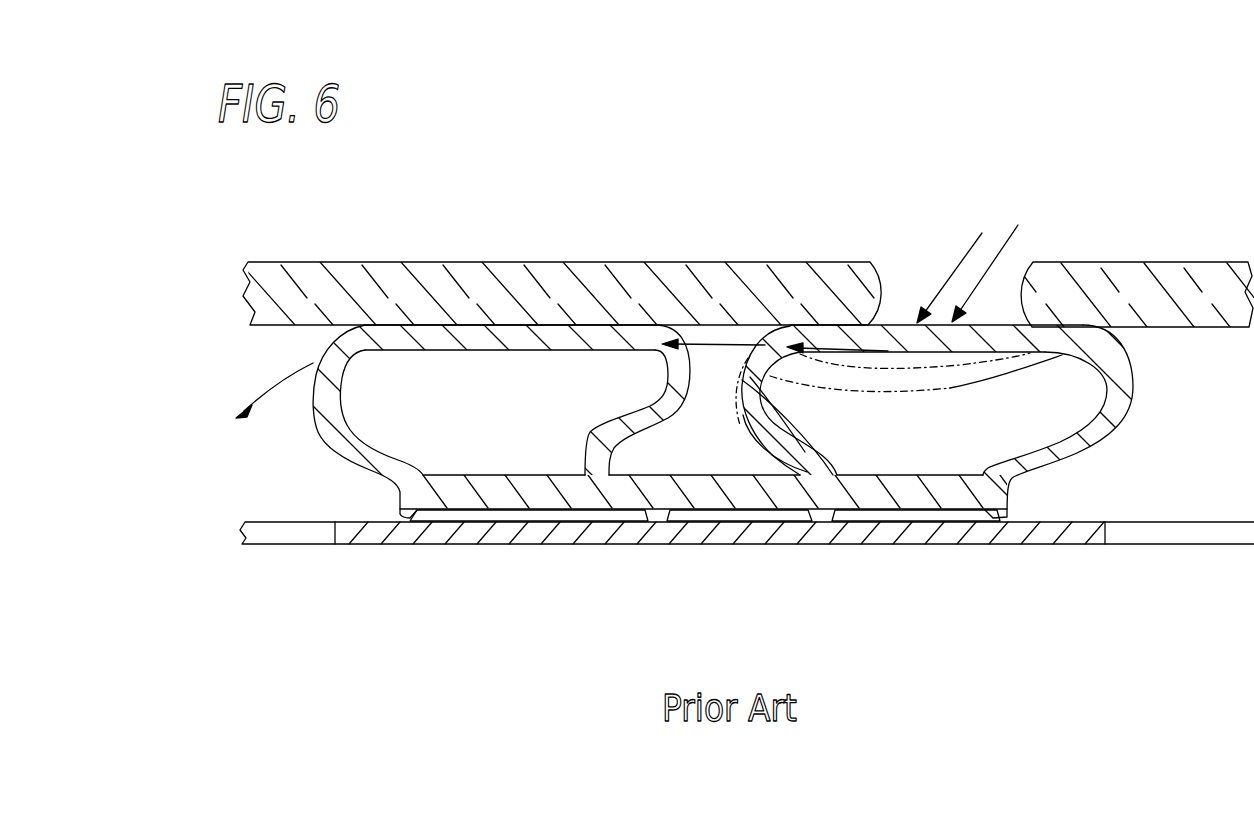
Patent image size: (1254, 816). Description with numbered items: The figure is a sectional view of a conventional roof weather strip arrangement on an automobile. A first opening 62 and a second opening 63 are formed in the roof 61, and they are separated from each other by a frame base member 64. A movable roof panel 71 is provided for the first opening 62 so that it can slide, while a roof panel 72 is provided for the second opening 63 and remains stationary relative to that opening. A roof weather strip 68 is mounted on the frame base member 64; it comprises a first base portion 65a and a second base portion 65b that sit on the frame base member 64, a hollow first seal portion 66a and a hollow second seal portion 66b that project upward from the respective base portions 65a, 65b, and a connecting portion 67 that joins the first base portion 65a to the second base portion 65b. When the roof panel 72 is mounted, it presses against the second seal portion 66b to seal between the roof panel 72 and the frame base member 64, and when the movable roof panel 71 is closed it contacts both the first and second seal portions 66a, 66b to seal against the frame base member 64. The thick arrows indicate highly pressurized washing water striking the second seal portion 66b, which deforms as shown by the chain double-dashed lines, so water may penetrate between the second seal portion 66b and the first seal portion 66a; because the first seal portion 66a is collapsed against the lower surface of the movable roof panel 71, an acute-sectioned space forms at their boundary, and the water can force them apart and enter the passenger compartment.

The movable roof panel 71 is at (460, 262).
The roof panel 72 is at (1137, 262).
The roof 61 is at (747, 580).
The first opening 62 is at (330, 533).
The second opening 63 is at (1107, 544).
The frame base member 64 is at (838, 544).
The first base portion 65a is at (532, 512).
The second base portion 65b is at (933, 520).
The first seal portion 66a is at (312, 414).
The second seal portion 66b is at (742, 417).
The connecting portion 67 is at (736, 512).
The roof weather strip 68 is at (1152, 406).